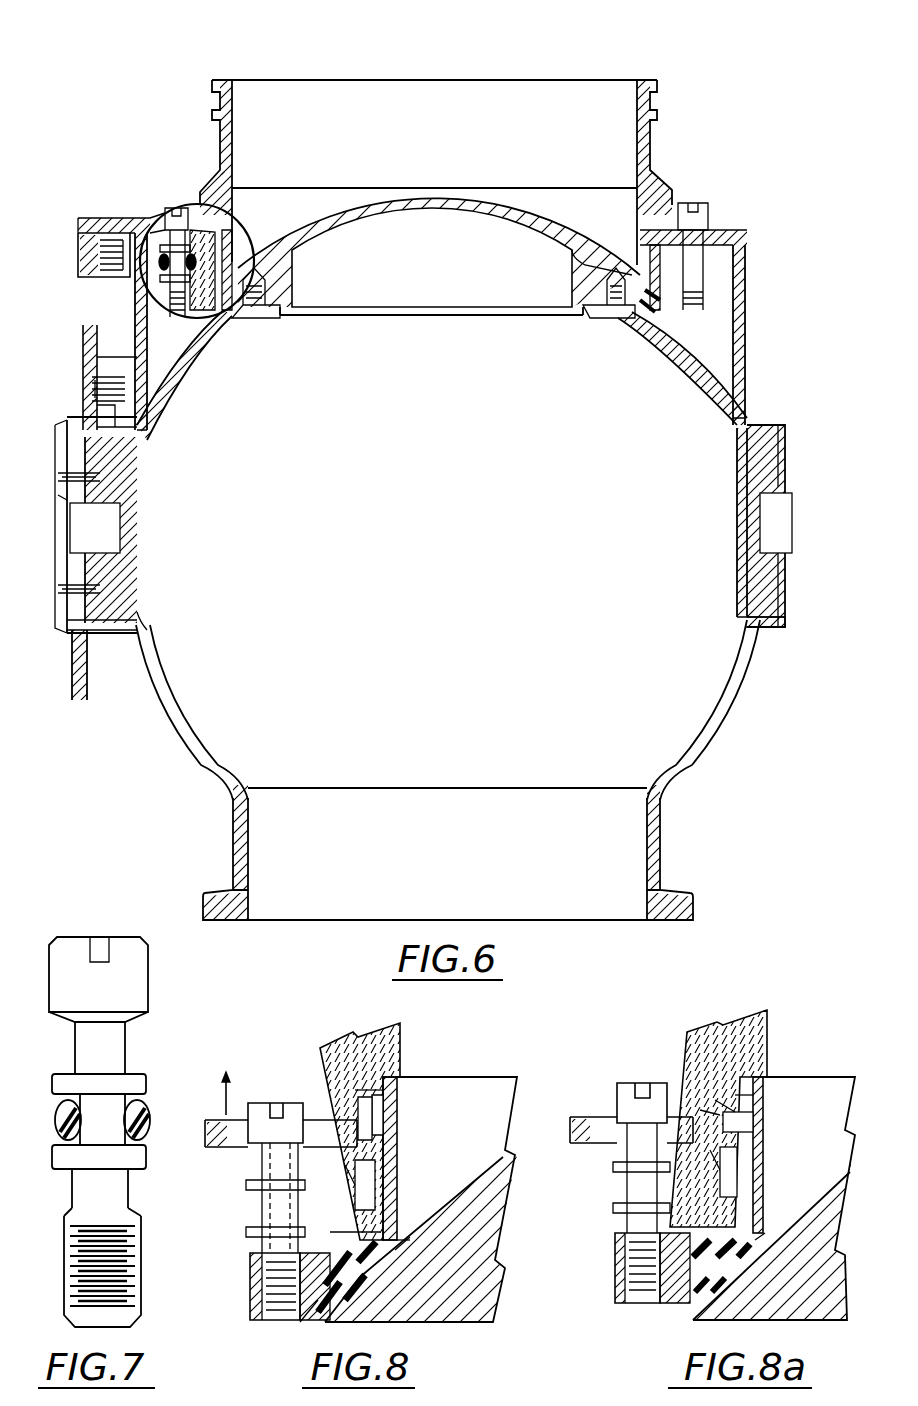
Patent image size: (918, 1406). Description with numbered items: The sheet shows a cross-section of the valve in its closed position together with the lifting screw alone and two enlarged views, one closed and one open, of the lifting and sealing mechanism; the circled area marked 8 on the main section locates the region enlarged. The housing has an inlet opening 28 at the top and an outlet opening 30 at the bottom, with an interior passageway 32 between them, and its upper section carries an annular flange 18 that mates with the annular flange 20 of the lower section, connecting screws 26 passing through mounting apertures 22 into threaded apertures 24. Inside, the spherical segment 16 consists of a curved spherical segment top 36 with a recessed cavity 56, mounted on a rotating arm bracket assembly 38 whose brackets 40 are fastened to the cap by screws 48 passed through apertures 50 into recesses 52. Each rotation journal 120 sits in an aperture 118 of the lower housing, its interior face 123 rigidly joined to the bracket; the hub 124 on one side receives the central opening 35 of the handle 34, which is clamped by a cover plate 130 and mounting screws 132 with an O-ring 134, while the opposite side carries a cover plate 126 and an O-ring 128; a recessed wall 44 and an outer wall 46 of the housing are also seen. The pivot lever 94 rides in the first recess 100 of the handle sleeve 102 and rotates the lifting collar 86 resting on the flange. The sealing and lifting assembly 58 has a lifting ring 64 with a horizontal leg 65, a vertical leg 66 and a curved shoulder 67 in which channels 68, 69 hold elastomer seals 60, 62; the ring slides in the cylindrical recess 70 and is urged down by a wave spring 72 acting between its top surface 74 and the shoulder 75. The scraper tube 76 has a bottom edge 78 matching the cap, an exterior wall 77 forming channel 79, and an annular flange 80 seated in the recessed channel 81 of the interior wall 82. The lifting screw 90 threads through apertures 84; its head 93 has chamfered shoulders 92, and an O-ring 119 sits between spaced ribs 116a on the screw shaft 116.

In FIG. 6, the detail circle of FIG. 8 is at (178, 197).
In FIG. 6, the spherical segment 16 is at (586, 250).
In FIG. 6, the annular flange 18 is at (80, 240).
In FIG. 6, the mating annular flange 20 is at (85, 255).
In FIG. 6, the mounting apertures 22 is at (78, 225).
In FIG. 6, the apertures 24 is at (80, 272).
In FIG. 6, the connecting screws 26 is at (112, 278).
In FIG. 6, the inlet opening 28 is at (488, 62).
In FIG. 6, the outlet opening 30 is at (580, 920).
In FIG. 6, the interior passageway 32 is at (416, 468).
In FIG. 6, the handle 34 is at (72, 690).
In FIG. 6, the central opening 35 is at (60, 498).
In FIG. 6, the spherical segment top 36 is at (470, 198).
In FIG. 6, the rotating arm bracket assembly 38 is at (722, 379).
In FIG. 6, the brackets 40 is at (737, 448).
In FIG. 6, the side wall 44 is at (738, 580).
In FIG. 6, the outer body wall 46 is at (740, 362).
In FIG. 6, the screws 48 is at (268, 318).
In FIG. 6, the apertures 50 is at (620, 322).
In FIG. 6, the recesses 52 is at (590, 290).
In FIG. 6, the recessed cavity 56 is at (376, 245).
In FIG. 6, the sealing and lifting assembly 58 is at (182, 172).
In FIG. 8, the sealing and lifting assembly 58 is at (292, 1072).
In FIG. 6, the elastomer seal 60 is at (660, 310).
In FIG. 8, the elastomer seal 60 is at (335, 1305).
In FIG. 6, the elastomer seal 62 is at (632, 278).
In FIG. 8, the elastomer seal 62 is at (362, 1262).
In FIG. 8, the lifting ring 64 is at (380, 1165).
In FIG. 8, the horizontal leg 65 is at (252, 1292).
In FIG. 8A, the horizontal leg 65 is at (615, 1281).
In FIG. 8, the vertical leg 66 is at (345, 1160).
In FIG. 8A, the vertical leg 66 is at (763, 1145).
In FIG. 8, the curved shoulder 67 is at (310, 1322).
In FIG. 8A, the curved shoulder 67 is at (695, 1295).
In FIG. 8, the channel 68 is at (252, 1318).
In FIG. 8A, the channel 68 is at (660, 1300).
In FIG. 8, the channel 69 is at (262, 1253).
In FIG. 8A, the channel 69 is at (618, 1245).
In FIG. 8, the cylindrical recess 70 is at (375, 1140).
In FIG. 8A, the cylindrical recess 70 is at (700, 1110).
In FIG. 8, the wave spring 72 is at (395, 1112).
In FIG. 8A, the wave spring 72 is at (755, 1108).
In FIG. 8A, the top surface 74 is at (755, 1125).
In FIG. 8, the shoulder 75 is at (358, 1098).
In FIG. 8A, the shoulder 75 is at (718, 1091).
In FIG. 8, the scraper tube 76 is at (392, 1240).
In FIG. 8, the exterior wall 77 is at (336, 1172).
In FIG. 8A, the exterior wall 77 is at (703, 1165).
In FIG. 8, the bottom edge 78 is at (395, 1250).
In FIG. 8A, the bottom edge 78 is at (755, 1240).
In FIG. 8A, the channel 79 is at (722, 1178).
In FIG. 8, the annular flange 80 is at (388, 1080).
In FIG. 8A, the annular flange 80 is at (757, 1080).
In FIG. 8, the recessed channel 81 is at (368, 1080).
In FIG. 8A, the recessed channel 81 is at (744, 1078).
In FIG. 6, the interior wall 82 is at (167, 214).
In FIG. 8, the apertures 84 is at (250, 1272).
In FIG. 8A, the apertures 84 is at (615, 1260).
In FIG. 6, the lifting collar 86 is at (96, 218).
In FIG. 8, the lifting collar 86 is at (228, 1120).
In FIG. 8A, the lifting collar 86 is at (595, 1117).
In FIG. 7, the lifting screw 90 is at (150, 970).
In FIG. 8A, the lifting screw 90 is at (620, 1083).
In FIG. 7, the chamfered shoulders 92 is at (60, 1014).
In FIG. 8, the chamfered shoulders 92 is at (258, 1103).
In FIG. 7, the head 93 is at (116, 937).
In FIG. 6, the pivot lever 94 is at (83, 347).
In FIG. 6, the first recess 100 is at (85, 398).
In FIG. 6, the sleeve 102 is at (83, 420).
In FIG. 7, the screw shaft 116 is at (128, 1042).
In FIG. 7, the spaced ribs 116a is at (152, 1140).
In FIG. 6, the apertures 118 is at (145, 612).
In FIG. 6, the O-ring 119 is at (200, 260).
In FIG. 7, the O-ring 119 is at (55, 1128).
In FIG. 6, the rotation journal 120 is at (128, 568).
In FIG. 6, the interior face 123 is at (140, 485).
In FIG. 6, the hub 124 is at (75, 560).
In FIG. 6, the cover plate 126 is at (782, 489).
In FIG. 6, the O-ring 128 is at (755, 632).
In FIG. 6, the cover plate 130 is at (62, 462).
In FIG. 6, the mounting screws 132 is at (58, 478).
In FIG. 6, the O-ring 134 is at (100, 628).